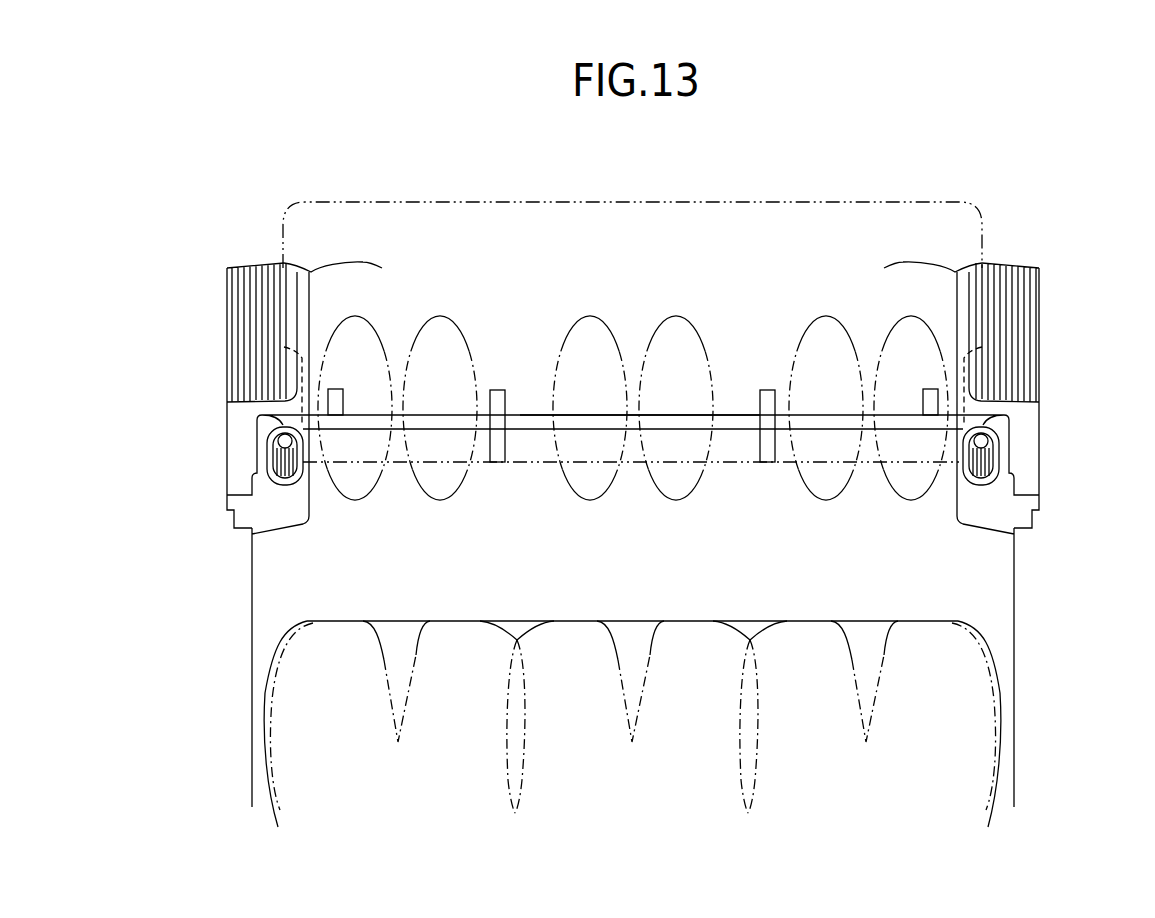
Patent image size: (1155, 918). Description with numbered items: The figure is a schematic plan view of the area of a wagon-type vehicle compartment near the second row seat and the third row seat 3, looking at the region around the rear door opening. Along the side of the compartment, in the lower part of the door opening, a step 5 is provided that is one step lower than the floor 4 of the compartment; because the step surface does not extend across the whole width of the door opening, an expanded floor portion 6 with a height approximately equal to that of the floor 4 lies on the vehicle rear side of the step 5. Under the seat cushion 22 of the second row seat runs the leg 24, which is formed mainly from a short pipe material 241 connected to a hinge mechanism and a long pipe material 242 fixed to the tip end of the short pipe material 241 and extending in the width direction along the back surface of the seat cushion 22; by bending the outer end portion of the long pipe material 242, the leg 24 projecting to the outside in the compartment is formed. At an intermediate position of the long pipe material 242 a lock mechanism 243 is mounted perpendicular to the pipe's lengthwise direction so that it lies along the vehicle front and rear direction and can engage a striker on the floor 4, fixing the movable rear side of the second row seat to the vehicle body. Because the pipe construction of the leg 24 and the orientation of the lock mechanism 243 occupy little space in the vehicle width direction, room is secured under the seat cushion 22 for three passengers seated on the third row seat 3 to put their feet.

The third row seat 3 is at (758, 621).
The floor 4 is at (551, 567).
The step 5 is at (247, 320).
The expanded floor portion 6 is at (287, 463).
The seat cushion 22 is at (806, 200).
The leg 24 is at (285, 432).
The short pipe material 241 is at (345, 400).
The long pipe material 242 is at (540, 414).
The lock mechanism 243 is at (493, 387).